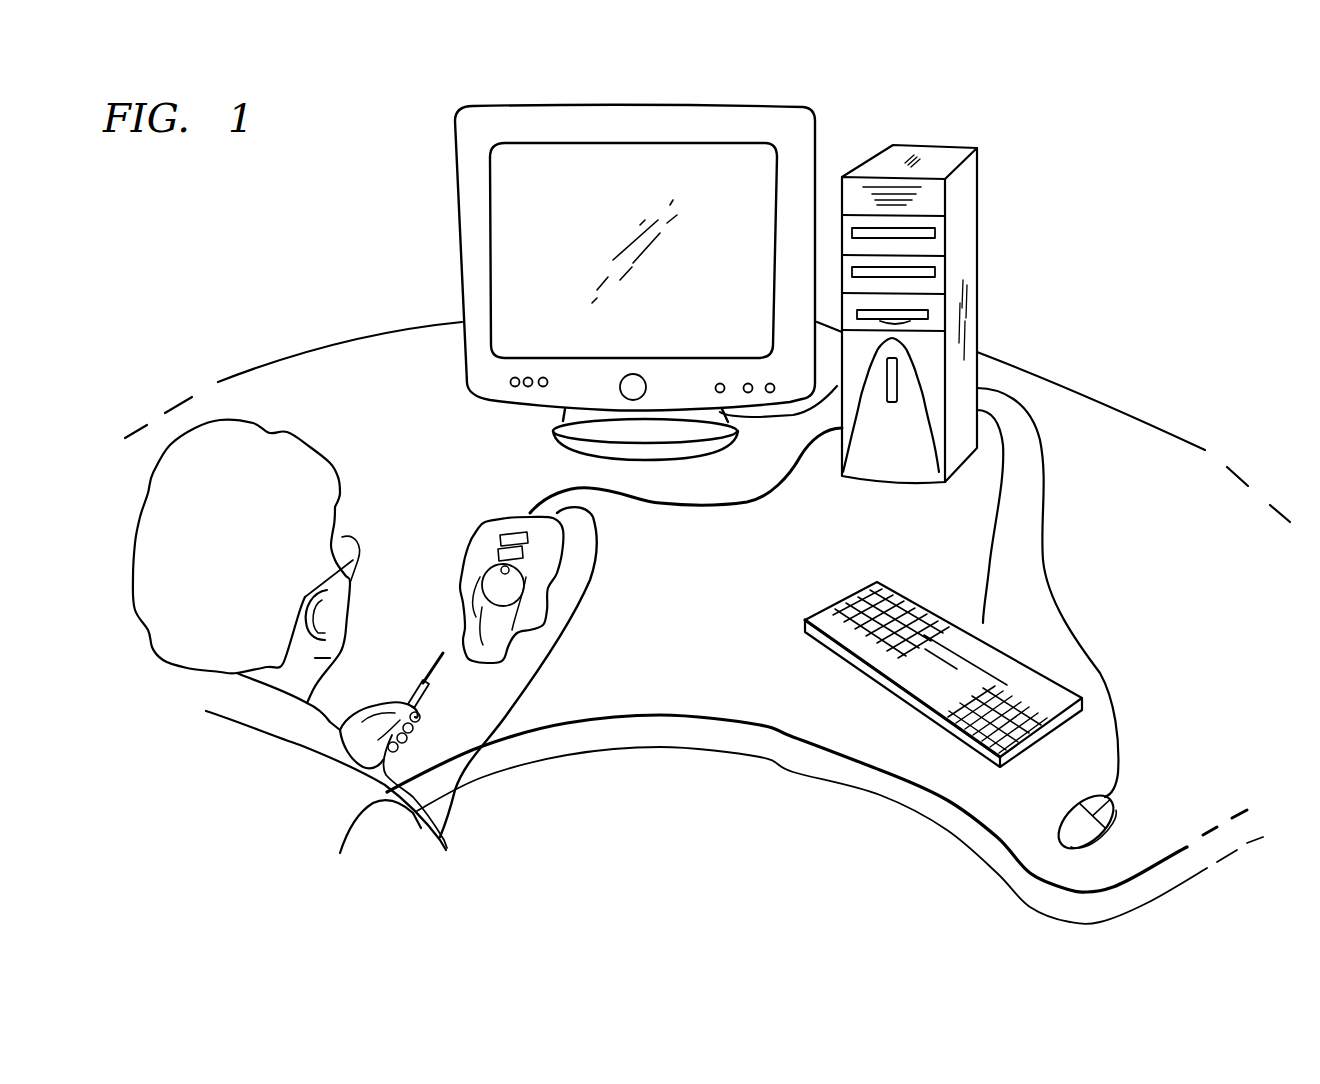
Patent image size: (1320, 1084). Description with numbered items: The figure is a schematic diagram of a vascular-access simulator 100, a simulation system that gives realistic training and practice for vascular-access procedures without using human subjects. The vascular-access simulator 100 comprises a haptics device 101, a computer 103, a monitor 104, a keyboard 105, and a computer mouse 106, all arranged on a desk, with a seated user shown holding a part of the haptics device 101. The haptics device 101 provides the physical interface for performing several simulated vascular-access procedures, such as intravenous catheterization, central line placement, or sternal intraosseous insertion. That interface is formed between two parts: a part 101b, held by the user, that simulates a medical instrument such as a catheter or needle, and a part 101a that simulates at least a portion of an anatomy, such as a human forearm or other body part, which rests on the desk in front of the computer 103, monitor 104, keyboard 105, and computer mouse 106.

The vascular-access simulator 100 is at (188, 200).
The haptics device 101 is at (443, 588).
The anatomy-simulating part 101a is at (500, 520).
The medical-instrument-simulating part 101b is at (438, 684).
The computer 103 is at (968, 228).
The monitor 104 is at (468, 165).
The keyboard 105 is at (840, 603).
The computer mouse 106 is at (1108, 810).